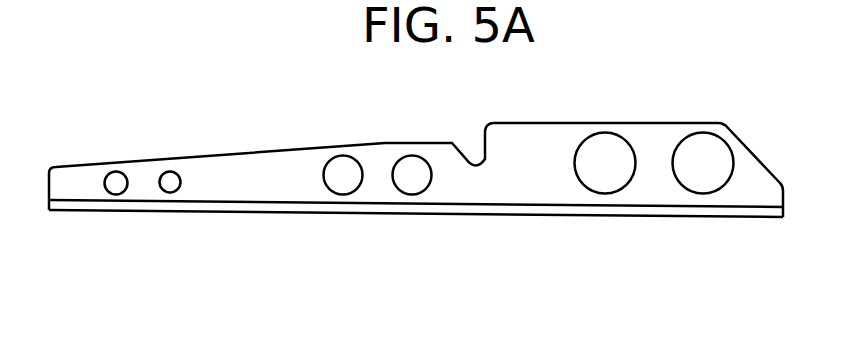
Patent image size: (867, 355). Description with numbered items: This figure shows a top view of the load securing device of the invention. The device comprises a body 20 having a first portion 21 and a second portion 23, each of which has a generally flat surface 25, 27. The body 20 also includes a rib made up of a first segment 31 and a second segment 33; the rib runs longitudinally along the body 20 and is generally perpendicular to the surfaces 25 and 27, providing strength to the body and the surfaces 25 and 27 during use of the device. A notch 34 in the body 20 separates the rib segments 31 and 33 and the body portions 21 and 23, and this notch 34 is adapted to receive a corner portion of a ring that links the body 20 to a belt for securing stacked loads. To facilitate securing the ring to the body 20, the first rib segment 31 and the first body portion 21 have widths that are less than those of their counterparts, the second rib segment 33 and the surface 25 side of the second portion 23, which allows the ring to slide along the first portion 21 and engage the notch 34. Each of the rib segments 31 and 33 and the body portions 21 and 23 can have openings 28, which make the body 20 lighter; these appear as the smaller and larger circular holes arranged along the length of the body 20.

The body 20 is at (452, 252).
The first portion 21 is at (308, 220).
The second portion 23 is at (657, 222).
The generally flat surface 25 is at (215, 213).
The generally flat surface 27 is at (582, 215).
The openings 28 is at (117, 175).
The first segment 31 is at (240, 176).
The second segment 33 is at (543, 137).
The notch 34 is at (465, 138).